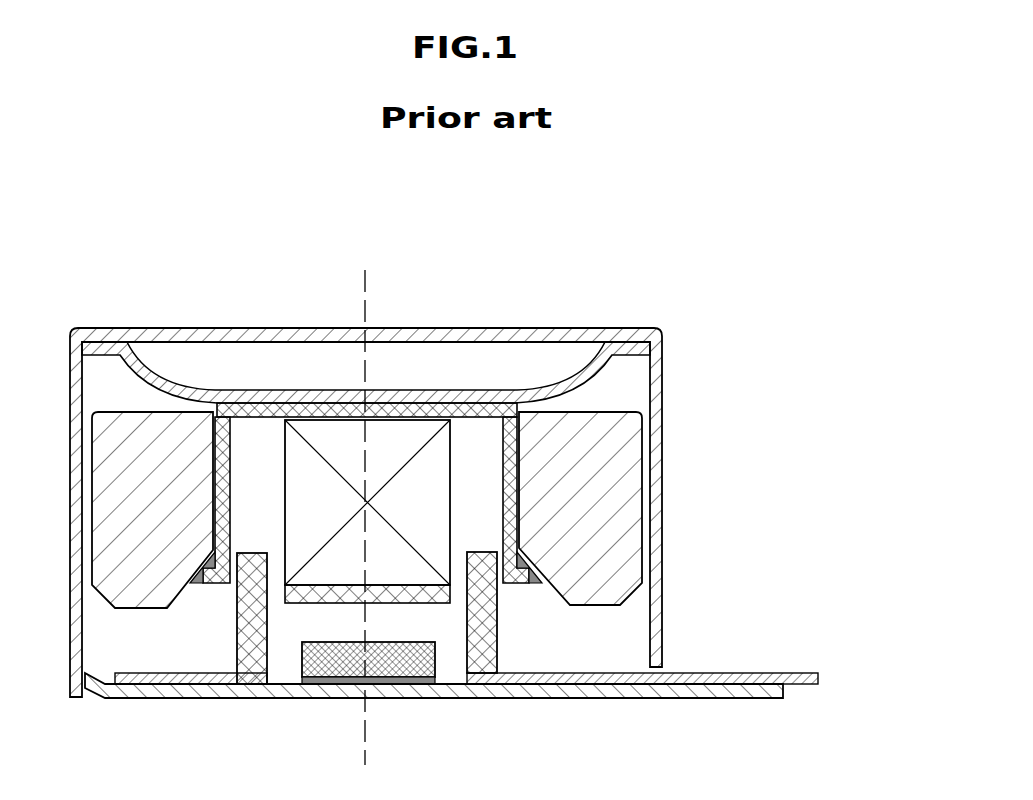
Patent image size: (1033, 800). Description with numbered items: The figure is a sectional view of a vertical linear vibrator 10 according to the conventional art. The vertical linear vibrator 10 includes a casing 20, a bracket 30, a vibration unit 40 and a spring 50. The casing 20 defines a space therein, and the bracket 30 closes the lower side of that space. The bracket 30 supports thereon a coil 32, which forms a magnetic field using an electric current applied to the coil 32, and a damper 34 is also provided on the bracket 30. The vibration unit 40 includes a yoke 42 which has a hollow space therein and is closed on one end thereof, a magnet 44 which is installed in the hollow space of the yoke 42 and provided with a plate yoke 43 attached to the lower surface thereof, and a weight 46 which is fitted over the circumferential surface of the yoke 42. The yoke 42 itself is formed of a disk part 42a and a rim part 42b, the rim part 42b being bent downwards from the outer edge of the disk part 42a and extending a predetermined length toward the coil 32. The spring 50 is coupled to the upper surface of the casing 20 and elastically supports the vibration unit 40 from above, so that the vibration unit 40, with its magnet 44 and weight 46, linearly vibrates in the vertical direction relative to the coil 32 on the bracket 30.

The vertical linear vibrator 10 is at (102, 218).
The casing 20 is at (528, 333).
The bracket 30 is at (535, 688).
The coil 32 is at (253, 658).
The damper 34 is at (400, 690).
The vibration unit 40 is at (833, 412).
The yoke 42 is at (770, 383).
The disk part 42a is at (487, 394).
The rim part 42b is at (517, 480).
The plate yoke 43 is at (425, 603).
The magnet 44 is at (425, 518).
The weight 46 is at (590, 567).
The spring 50 is at (170, 383).